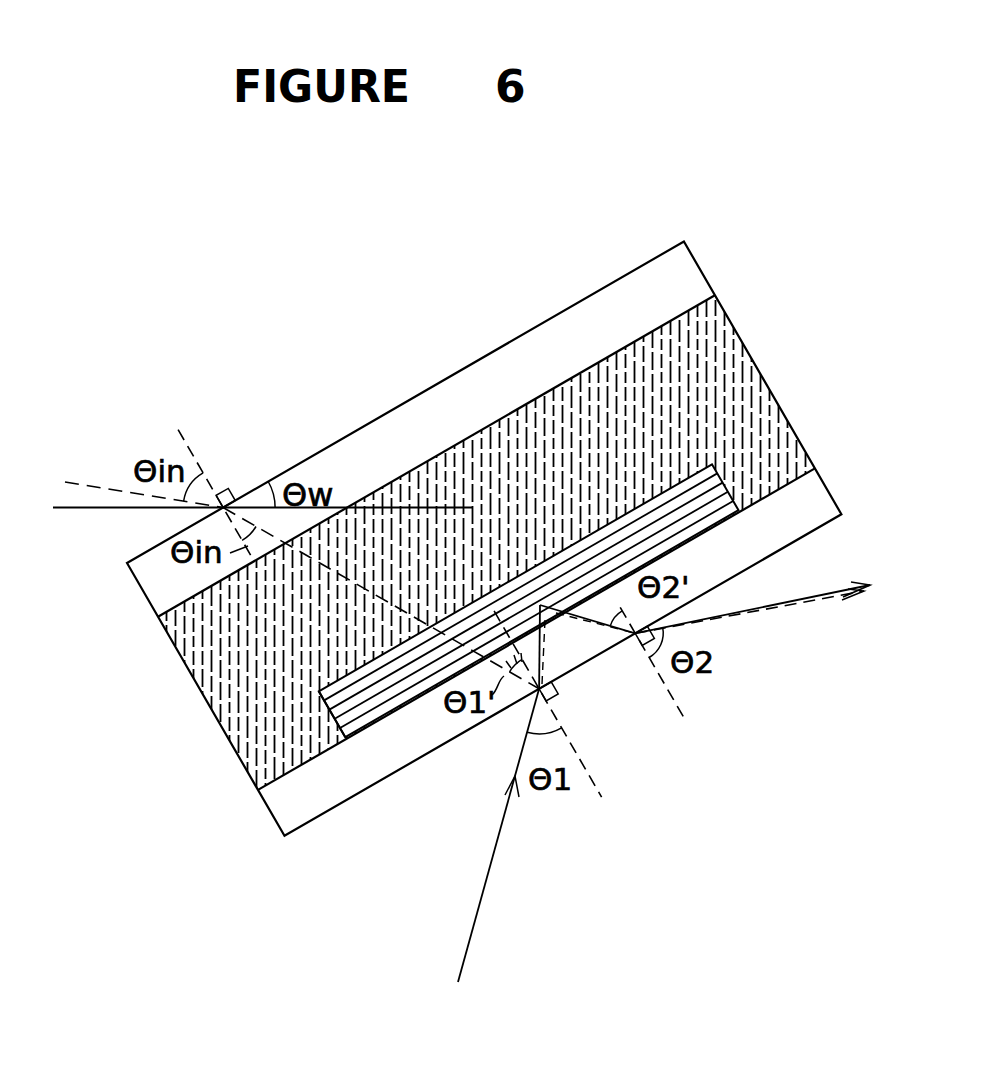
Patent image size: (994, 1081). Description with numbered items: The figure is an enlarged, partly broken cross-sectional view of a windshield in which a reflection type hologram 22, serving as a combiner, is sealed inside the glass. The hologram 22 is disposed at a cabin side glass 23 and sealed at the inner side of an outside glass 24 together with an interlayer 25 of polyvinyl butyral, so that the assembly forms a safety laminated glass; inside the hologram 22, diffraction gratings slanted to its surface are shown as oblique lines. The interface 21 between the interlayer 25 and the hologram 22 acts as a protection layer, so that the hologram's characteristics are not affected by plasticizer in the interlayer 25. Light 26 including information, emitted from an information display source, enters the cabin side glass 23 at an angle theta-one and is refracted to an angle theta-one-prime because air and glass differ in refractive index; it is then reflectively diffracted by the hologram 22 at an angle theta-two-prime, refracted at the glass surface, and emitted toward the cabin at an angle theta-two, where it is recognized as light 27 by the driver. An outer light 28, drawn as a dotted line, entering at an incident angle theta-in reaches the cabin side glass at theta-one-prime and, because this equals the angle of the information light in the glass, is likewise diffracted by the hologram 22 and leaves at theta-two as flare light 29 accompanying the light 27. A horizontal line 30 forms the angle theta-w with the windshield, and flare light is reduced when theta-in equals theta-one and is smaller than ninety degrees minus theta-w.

The interface 21 is at (340, 722).
The reflection type hologram 22 is at (387, 697).
The cabin side glass 23 is at (292, 798).
The outside glass 24 is at (626, 313).
The interlayer 25 is at (237, 698).
The light including information 26 is at (487, 888).
The light 27 is at (810, 595).
The outer light 28 is at (100, 482).
The flare light 29 is at (780, 607).
The horizontal line 30 is at (87, 512).